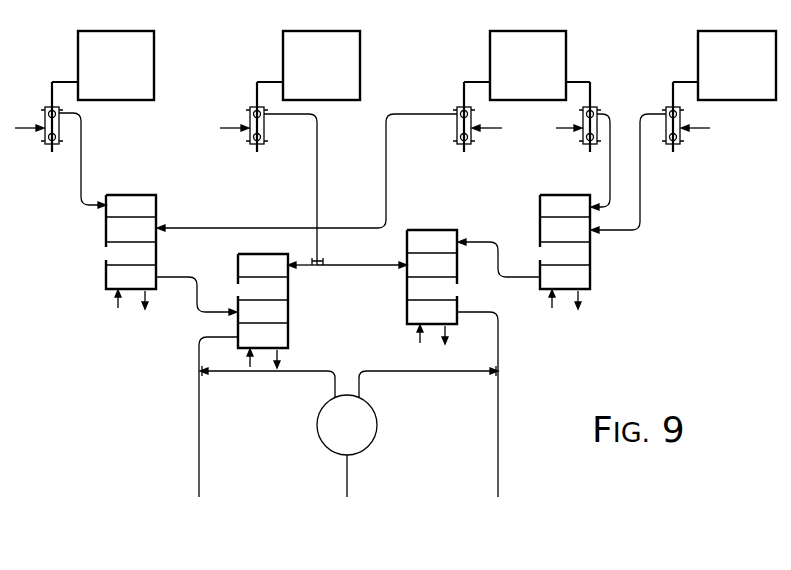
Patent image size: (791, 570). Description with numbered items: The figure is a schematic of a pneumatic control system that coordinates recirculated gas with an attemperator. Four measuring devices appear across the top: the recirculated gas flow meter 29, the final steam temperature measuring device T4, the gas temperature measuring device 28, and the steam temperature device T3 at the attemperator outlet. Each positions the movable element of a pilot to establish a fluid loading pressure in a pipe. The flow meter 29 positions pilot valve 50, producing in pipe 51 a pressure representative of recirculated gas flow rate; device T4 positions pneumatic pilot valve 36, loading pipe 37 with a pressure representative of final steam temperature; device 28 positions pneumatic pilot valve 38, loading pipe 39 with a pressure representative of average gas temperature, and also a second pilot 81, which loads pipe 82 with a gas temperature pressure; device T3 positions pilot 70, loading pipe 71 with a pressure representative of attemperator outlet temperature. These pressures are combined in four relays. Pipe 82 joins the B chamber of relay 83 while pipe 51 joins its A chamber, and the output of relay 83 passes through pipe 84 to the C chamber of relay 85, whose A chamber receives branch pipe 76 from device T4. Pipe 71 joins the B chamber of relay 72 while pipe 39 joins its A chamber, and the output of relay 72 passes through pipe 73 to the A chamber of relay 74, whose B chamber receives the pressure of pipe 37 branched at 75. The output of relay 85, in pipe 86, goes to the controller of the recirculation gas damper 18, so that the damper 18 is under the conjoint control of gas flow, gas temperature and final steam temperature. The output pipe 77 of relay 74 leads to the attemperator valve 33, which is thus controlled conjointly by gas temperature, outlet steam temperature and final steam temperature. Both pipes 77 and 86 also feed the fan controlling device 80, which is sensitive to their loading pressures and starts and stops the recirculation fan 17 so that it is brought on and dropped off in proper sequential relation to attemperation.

The recirculated gas flow meter 29 is at (156, 49).
The final steam temperature measuring device T4 is at (361, 53).
The gas temperature measuring device 28 is at (567, 48).
The steam temperature device at attemperator outlet T3 is at (698, 46).
The pilot valve 50 is at (47, 145).
The pipe 51 is at (82, 149).
The pneumatic pilot valve 36 is at (250, 146).
The pipe 37 is at (316, 174).
The pipe 82 is at (385, 171).
The pilot 81 is at (472, 142).
The pneumatic pilot valve 38 is at (582, 141).
The pipe 39 is at (609, 171).
The pilot 70 is at (681, 142).
The pipe 71 is at (641, 203).
The relay 83 is at (143, 194).
The relay 85 is at (238, 256).
The relay 74 is at (439, 229).
The relay 72 is at (543, 194).
The pipe 84 is at (198, 304).
The pipe 73 is at (503, 253).
The branch 75 is at (383, 267).
The branch pipe 76 is at (305, 267).
The pipe 86 is at (197, 423).
The output pipe 77 is at (500, 342).
The fan controlling device 80 is at (349, 431).
The recirculation gas damper 18 is at (197, 530).
The recirculation fan 17 is at (352, 521).
The attemperator valve 33 is at (499, 521).